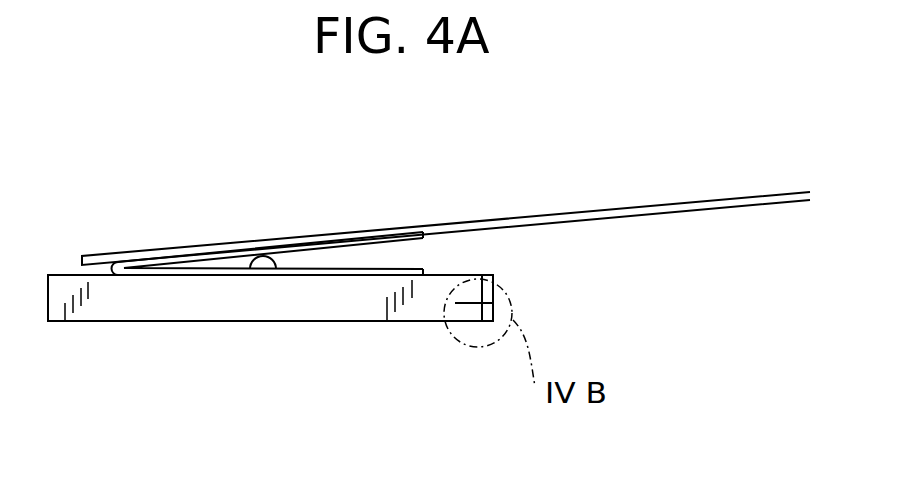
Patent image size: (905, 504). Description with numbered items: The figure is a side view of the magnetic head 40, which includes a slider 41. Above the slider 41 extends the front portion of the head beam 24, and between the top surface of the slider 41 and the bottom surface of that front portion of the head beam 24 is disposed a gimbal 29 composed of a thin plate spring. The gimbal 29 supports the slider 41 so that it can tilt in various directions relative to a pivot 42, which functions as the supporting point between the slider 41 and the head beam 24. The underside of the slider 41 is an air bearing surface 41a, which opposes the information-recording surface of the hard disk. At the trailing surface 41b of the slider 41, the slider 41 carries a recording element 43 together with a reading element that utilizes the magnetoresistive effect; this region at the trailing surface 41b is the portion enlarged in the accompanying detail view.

The head beam 24 is at (643, 206).
The gimbal 29 is at (392, 268).
The pivot 42 is at (262, 256).
The slider 41 is at (222, 298).
The air bearing surface 41a is at (333, 322).
The trailing surface 41b is at (453, 321).
The recording element 43 is at (488, 290).
The magnetic head 40 is at (93, 323).